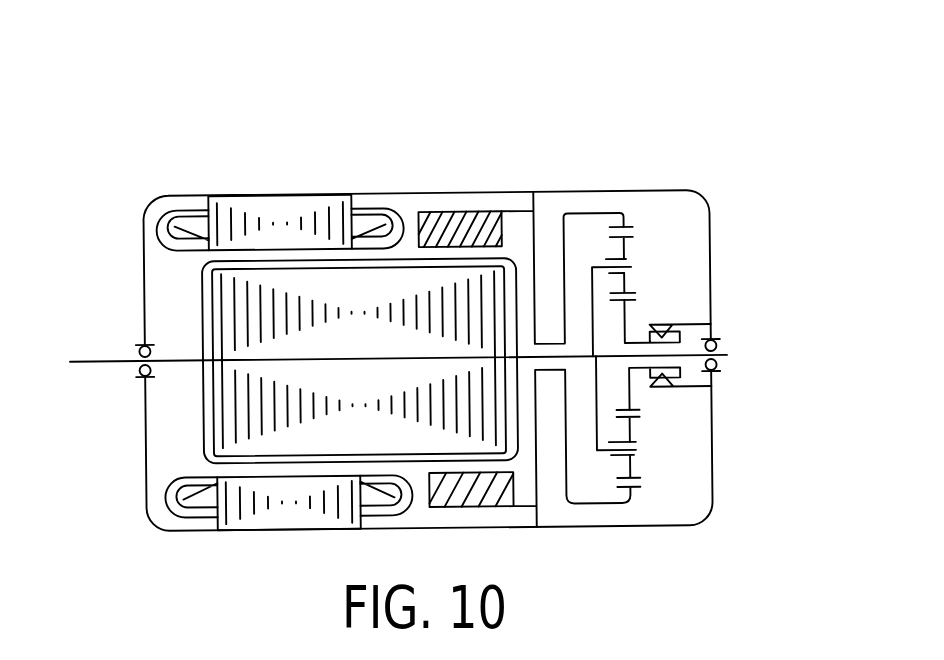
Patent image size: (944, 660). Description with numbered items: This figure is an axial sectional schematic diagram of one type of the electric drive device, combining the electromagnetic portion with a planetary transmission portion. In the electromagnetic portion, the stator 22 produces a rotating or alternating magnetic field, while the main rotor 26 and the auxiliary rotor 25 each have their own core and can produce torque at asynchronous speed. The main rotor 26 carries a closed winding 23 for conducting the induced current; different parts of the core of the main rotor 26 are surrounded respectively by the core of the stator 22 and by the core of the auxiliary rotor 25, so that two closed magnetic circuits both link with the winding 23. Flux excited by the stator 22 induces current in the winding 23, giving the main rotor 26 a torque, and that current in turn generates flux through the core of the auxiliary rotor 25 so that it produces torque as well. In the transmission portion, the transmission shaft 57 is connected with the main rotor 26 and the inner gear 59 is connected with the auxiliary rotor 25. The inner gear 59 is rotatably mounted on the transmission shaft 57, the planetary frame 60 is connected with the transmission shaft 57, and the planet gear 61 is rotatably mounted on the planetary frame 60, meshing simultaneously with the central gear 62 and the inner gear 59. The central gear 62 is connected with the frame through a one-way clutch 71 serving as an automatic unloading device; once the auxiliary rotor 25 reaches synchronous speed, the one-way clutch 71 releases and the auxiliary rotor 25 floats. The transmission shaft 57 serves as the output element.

The transmission shaft 57 is at (110, 358).
The stator 22 is at (253, 212).
The main rotor winding 23 is at (294, 259).
The main rotor 26 is at (324, 286).
The auxiliary rotor 25 is at (463, 222).
The inner gear 59 is at (579, 214).
The planetary frame 60 is at (596, 268).
The planet gear 61 is at (628, 250).
The central gear 62 is at (628, 317).
The one-way clutch 71 is at (673, 329).